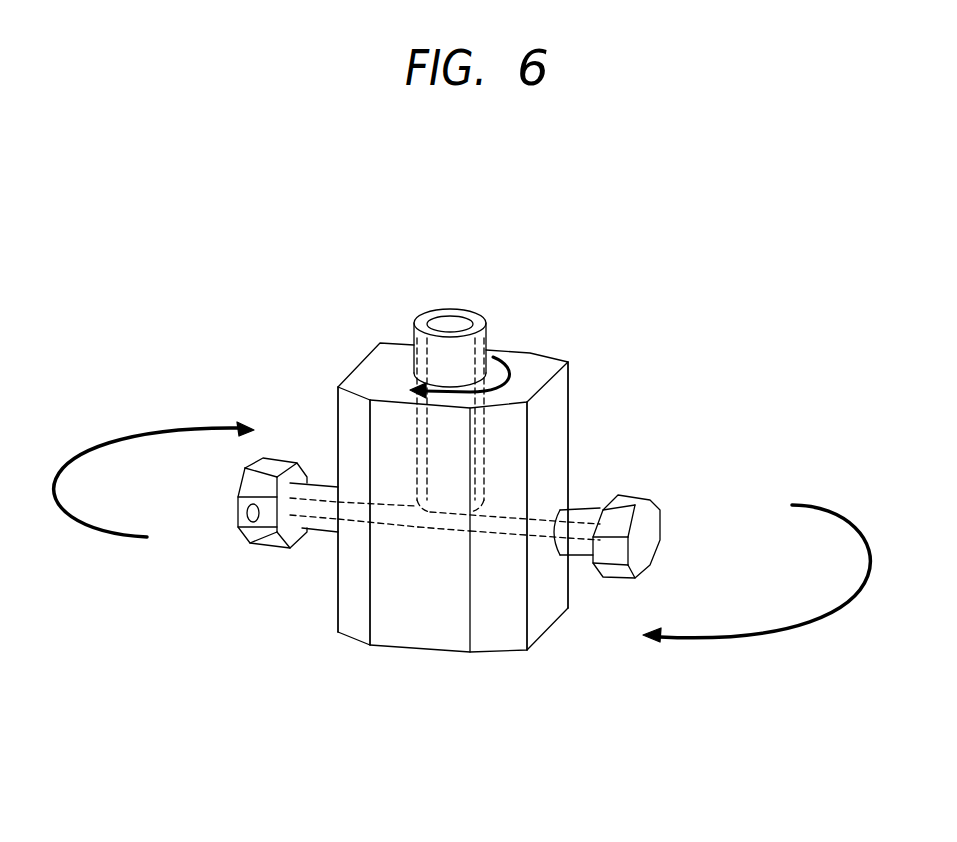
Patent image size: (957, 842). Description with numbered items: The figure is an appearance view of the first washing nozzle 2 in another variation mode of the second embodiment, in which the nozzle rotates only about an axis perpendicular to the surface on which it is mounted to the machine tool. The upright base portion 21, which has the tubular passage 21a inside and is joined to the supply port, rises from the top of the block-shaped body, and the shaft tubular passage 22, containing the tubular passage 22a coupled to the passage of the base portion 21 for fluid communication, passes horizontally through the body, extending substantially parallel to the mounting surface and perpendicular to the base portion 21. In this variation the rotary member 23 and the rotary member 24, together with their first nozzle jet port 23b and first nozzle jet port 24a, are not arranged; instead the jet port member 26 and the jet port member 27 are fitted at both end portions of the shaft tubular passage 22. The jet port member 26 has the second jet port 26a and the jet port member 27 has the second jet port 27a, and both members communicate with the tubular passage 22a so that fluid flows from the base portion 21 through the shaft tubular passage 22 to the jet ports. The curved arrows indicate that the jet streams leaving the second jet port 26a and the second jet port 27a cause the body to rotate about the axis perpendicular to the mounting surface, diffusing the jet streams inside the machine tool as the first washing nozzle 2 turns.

The first washing nozzle 2 is at (461, 463).
The base portion 21 is at (476, 323).
The tubular passage 21a is at (476, 258).
The shaft tubular passage 22 is at (459, 536).
The tubular passage 22a is at (453, 608).
The rotary member 23 is at (698, 491).
The first nozzle jet port 23b is at (646, 489).
The rotary member 24 is at (308, 476).
The first nozzle jet port 24a is at (277, 456).
The jet port member 26 is at (519, 502).
The second jet port 26a is at (673, 536).
The jet port member 27 is at (232, 503).
The second jet port 27a is at (193, 511).